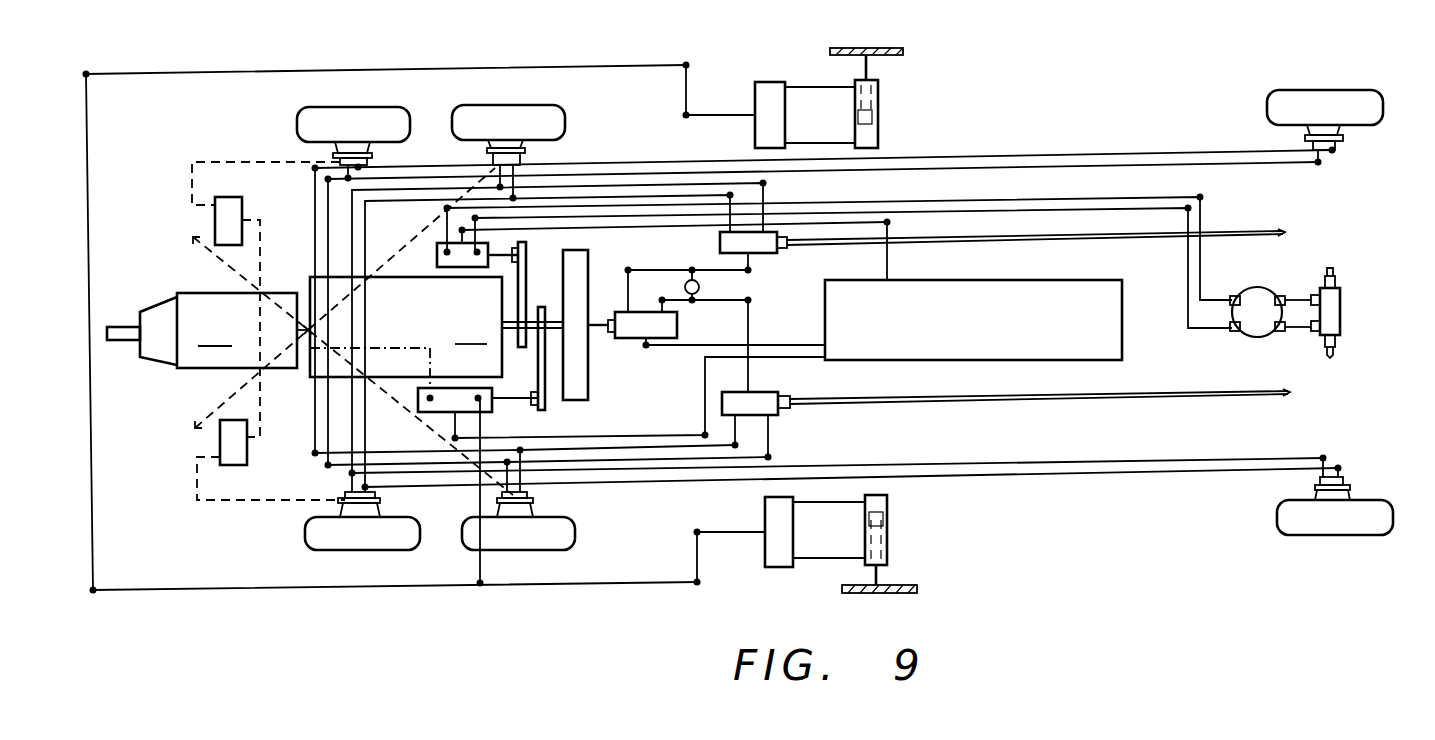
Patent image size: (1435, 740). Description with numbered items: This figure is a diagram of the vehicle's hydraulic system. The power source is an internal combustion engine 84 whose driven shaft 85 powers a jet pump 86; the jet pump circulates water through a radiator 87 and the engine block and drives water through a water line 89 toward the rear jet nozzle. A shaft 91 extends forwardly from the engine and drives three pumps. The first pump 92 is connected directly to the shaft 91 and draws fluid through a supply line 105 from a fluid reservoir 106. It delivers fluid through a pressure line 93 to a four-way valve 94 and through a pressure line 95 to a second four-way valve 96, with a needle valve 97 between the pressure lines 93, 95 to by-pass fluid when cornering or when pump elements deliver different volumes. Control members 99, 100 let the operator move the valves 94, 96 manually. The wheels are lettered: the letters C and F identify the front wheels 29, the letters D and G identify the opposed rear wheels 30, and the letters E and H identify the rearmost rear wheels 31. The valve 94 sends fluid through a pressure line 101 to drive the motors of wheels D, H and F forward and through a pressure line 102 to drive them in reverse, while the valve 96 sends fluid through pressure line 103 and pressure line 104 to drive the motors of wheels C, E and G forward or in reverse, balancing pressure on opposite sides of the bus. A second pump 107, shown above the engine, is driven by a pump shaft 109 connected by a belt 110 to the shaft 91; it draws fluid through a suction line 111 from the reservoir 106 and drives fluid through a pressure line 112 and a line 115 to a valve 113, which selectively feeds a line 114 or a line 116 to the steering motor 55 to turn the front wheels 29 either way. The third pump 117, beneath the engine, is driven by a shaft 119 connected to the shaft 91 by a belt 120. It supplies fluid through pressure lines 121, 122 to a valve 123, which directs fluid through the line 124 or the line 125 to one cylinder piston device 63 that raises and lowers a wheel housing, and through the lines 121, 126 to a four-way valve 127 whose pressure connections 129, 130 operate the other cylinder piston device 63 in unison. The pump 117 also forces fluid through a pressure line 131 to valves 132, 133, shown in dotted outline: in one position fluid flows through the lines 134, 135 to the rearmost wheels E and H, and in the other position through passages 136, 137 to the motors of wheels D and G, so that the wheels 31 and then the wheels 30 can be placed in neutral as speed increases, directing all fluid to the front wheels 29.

The front wheels 29 is at (1365, 100).
The rear wheels 30 is at (492, 113).
The rearmost rear wheels 31 is at (330, 113).
The steering motor 55 is at (1340, 305).
The cylinder piston device 63 is at (870, 137).
The internal combustion engine 84 is at (406, 327).
The driven shaft 85 is at (302, 318).
The jet pump 86 is at (218, 330).
The radiator 87 is at (575, 265).
The water line 89 is at (122, 327).
The shaft 91 is at (593, 328).
The pump 92 is at (637, 335).
The pressure line 93 is at (645, 270).
The four-way valve 94 is at (767, 250).
The pressure line 95 is at (720, 300).
The second four-way valve 96 is at (780, 409).
The needle valve 97 is at (697, 291).
The control member 99 is at (1036, 250).
The control member 100 is at (1040, 411).
The pressure line 101 is at (587, 186).
The pressure line 102 is at (658, 197).
The pressure line 103 is at (623, 437).
The pressure line 104 is at (665, 437).
The supply line 105 is at (782, 330).
The fluid reservoir 106 is at (1108, 325).
The second pump 107 is at (435, 258).
The pump shaft 109 is at (506, 264).
The belt 110 is at (517, 340).
The suction line 111 is at (823, 222).
The pressure line 112 is at (928, 212).
The valve 113 is at (1277, 282).
The line 114 is at (1297, 330).
The line 115 is at (1058, 198).
The line 116 is at (1303, 292).
The third pump 117 is at (428, 410).
The shaft 119 is at (510, 401).
The belt 120 is at (543, 383).
The pressure line 121 is at (479, 563).
The pressure line 122 is at (677, 582).
The valve 123 is at (772, 512).
The line 124 is at (803, 503).
The line 125 is at (830, 558).
The line 126 is at (390, 345).
The four-way valve 127 is at (768, 85).
The pressure connection 129 is at (846, 87).
The pressure connection 130 is at (845, 123).
The pressure line 131 is at (428, 348).
The valve 132 is at (230, 215).
The valve 133 is at (237, 450).
The line 134 is at (275, 160).
The line 135 is at (271, 499).
The passage 136 is at (320, 366).
The passage 137 is at (321, 298).
The front wheel C is at (1300, 100).
The rear wheel D is at (527, 112).
The rearmost rear wheel E is at (380, 113).
The front wheel F is at (1322, 525).
The rear wheel G is at (573, 550).
The rearmost rear wheel H is at (385, 545).